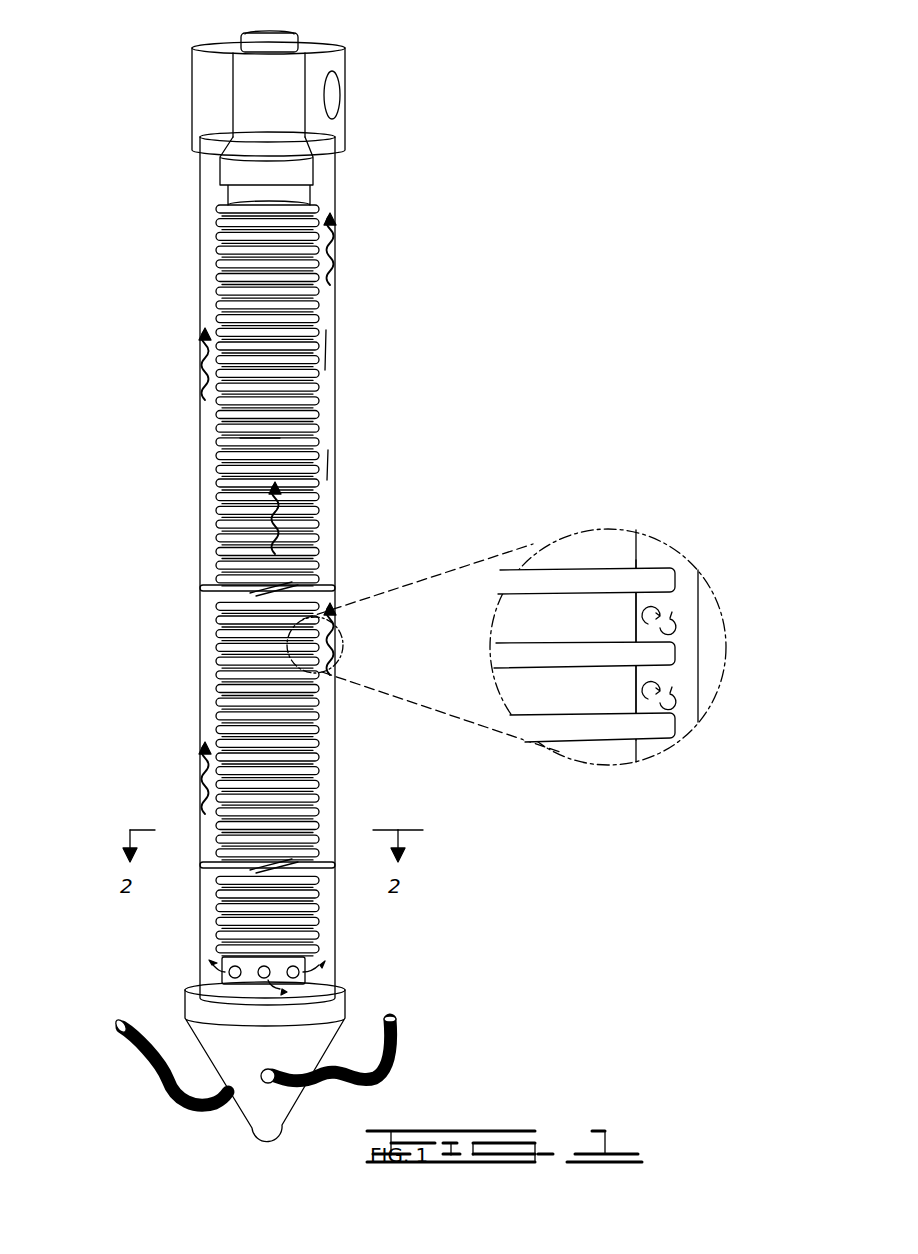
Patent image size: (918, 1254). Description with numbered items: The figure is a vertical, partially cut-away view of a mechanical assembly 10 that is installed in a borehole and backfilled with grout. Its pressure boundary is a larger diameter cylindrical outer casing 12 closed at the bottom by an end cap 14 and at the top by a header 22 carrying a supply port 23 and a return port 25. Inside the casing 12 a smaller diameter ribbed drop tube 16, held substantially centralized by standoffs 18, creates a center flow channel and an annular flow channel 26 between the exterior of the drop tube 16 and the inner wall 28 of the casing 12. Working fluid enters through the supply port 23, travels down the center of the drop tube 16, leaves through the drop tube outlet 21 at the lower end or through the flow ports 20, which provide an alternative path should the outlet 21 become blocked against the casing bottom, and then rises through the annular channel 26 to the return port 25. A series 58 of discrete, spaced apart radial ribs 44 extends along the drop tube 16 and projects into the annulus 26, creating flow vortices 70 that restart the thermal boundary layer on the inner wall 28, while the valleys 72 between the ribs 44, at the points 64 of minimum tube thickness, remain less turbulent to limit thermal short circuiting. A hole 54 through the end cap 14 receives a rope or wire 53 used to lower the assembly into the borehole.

The mechanical assembly 10 is at (558, 200).
The outer casing 12 is at (338, 388).
The end cap 14 is at (345, 1018).
The ribbed drop tube 16 is at (366, 580).
The standoffs 18 is at (208, 588).
The flow ports 20 is at (228, 983).
The drop tube outlet 21 is at (295, 1012).
The header 22 is at (195, 98).
The supply port 23 is at (265, 33).
The return port 25 is at (340, 97).
The annular flow channel 26 is at (326, 330).
The inner wall of the casing 28 is at (328, 450).
The radial ribs 44 is at (215, 278).
The rope or wire 53 is at (150, 1060).
The hole 54 is at (266, 1082).
The series of ribs 58 is at (240, 440).
The point of minimum tube thickness 64 is at (648, 760).
The flow vortices 70 is at (688, 607).
The valleys 72 is at (700, 637).